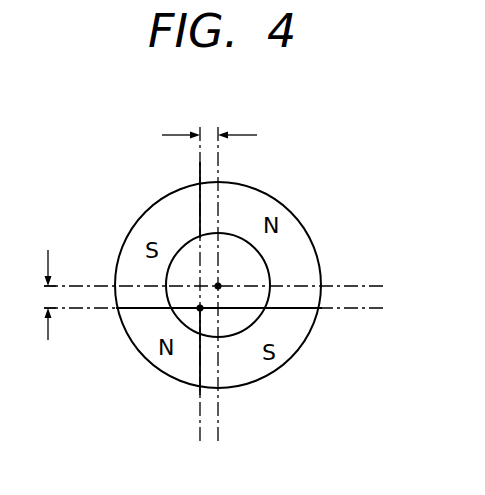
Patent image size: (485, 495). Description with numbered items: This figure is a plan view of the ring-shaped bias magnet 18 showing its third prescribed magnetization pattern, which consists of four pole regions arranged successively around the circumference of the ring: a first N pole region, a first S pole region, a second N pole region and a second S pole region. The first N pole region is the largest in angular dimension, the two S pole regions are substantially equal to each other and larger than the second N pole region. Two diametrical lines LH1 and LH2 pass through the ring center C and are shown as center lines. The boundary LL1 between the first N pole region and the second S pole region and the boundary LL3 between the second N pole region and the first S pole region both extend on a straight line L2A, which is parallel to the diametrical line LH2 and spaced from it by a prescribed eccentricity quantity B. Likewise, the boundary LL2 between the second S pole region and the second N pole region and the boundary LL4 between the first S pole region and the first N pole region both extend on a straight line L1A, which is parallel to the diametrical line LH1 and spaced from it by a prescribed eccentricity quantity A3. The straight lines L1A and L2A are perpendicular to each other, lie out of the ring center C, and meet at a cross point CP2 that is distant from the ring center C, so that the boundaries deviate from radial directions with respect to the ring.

The bias magnet 18 is at (305, 228).
The diametrical line LH1 is at (352, 285).
The straight line L1A is at (352, 310).
The diametrical line LH2 is at (218, 165).
The straight line L2A is at (200, 431).
The boundary LL1 is at (200, 207).
The boundary LL2 is at (138, 309).
The boundary LL3 is at (200, 368).
The boundary LL4 is at (297, 309).
The ring center C is at (218, 286).
The cross point CP2 is at (200, 308).
The eccentricity quantity A3 is at (35, 295).
The eccentricity quantity B is at (209, 122).